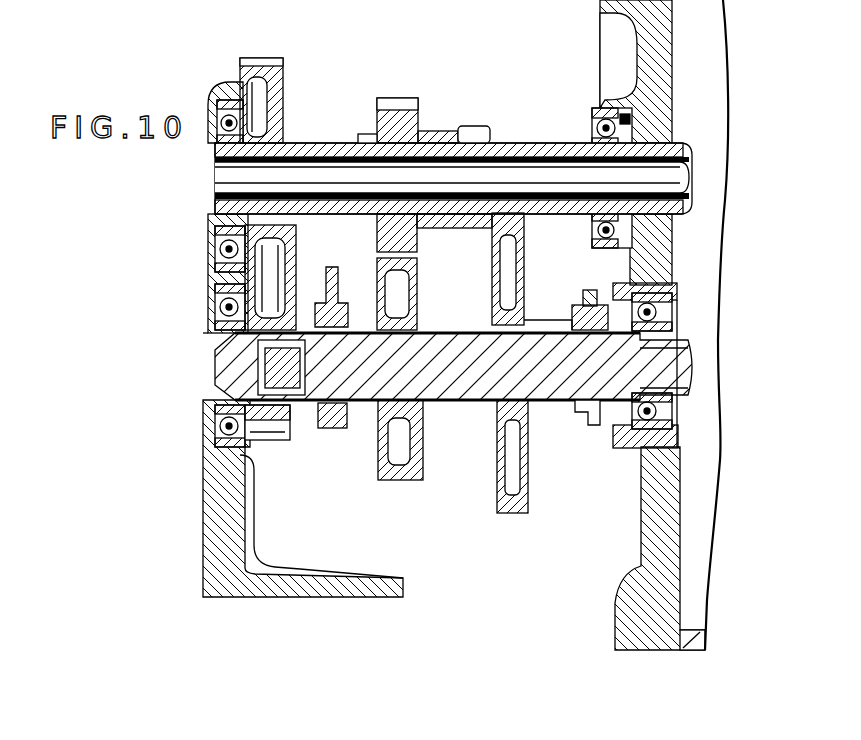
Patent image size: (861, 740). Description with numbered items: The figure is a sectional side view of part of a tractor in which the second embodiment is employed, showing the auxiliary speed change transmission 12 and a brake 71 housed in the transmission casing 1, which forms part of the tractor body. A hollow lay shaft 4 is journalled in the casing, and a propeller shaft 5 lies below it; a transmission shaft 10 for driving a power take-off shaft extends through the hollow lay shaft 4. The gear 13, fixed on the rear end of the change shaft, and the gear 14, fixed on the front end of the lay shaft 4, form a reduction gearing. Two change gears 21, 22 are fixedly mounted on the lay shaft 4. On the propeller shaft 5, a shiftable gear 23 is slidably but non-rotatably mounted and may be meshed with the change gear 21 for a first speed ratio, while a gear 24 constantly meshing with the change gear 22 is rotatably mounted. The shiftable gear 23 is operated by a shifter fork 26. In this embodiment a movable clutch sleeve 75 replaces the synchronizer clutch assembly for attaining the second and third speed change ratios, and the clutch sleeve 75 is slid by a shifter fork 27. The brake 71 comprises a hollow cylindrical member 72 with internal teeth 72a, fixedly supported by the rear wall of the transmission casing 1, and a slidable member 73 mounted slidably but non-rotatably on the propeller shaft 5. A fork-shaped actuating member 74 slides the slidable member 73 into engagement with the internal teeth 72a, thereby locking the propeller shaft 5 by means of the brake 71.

The transmission casing 1 is at (294, 590).
The hollow lay shaft 4 is at (343, 150).
The propeller shaft 5 is at (480, 370).
The transmission shaft 10 is at (345, 180).
The auxiliary speed change transmission 12 is at (389, 508).
The gear 13 is at (272, 445).
The gear 14 is at (268, 62).
The change gear 21 is at (478, 128).
The change gear 22 is at (403, 100).
The shiftable gear 23 is at (512, 515).
The gear 24 is at (390, 477).
The shifter fork 26 is at (518, 290).
The shifter fork 27 is at (338, 292).
The brake 71 is at (588, 428).
The hollow cylindrical member 72 is at (633, 263).
The internal teeth 72a is at (604, 427).
The slidable member 73 is at (597, 295).
The fork-shaped actuating member 74 is at (590, 300).
The movable clutch sleeve 75 is at (332, 420).